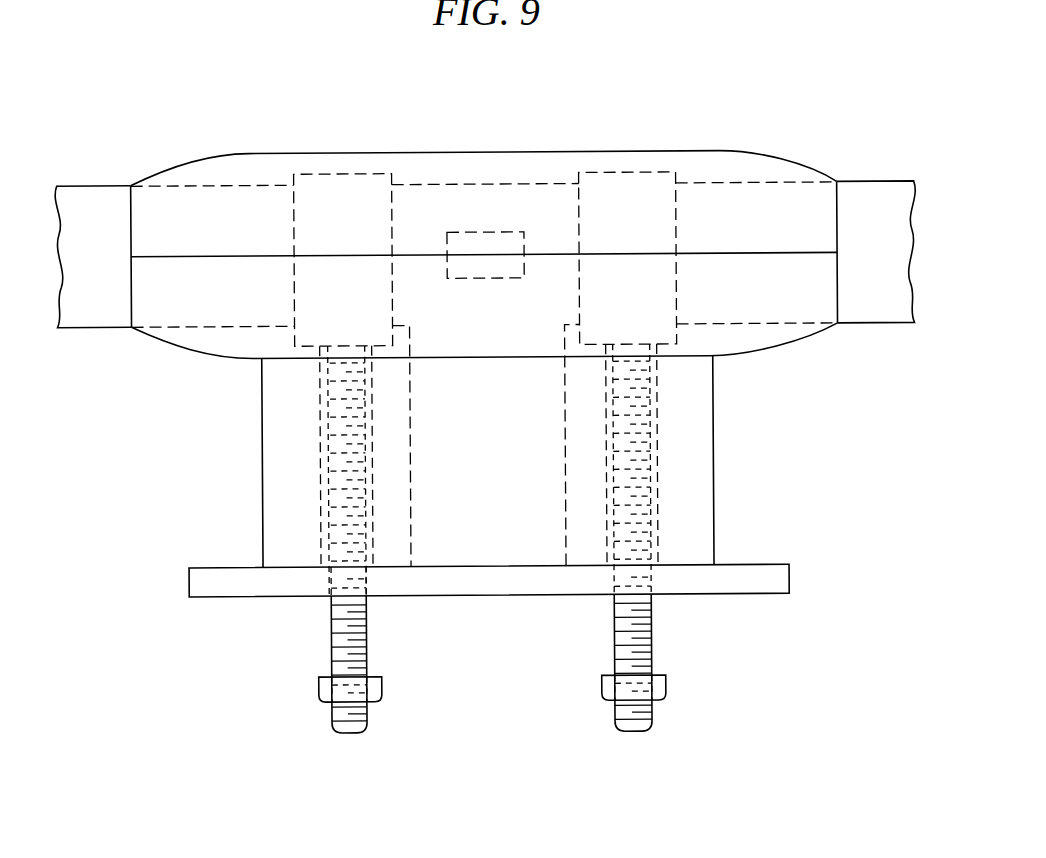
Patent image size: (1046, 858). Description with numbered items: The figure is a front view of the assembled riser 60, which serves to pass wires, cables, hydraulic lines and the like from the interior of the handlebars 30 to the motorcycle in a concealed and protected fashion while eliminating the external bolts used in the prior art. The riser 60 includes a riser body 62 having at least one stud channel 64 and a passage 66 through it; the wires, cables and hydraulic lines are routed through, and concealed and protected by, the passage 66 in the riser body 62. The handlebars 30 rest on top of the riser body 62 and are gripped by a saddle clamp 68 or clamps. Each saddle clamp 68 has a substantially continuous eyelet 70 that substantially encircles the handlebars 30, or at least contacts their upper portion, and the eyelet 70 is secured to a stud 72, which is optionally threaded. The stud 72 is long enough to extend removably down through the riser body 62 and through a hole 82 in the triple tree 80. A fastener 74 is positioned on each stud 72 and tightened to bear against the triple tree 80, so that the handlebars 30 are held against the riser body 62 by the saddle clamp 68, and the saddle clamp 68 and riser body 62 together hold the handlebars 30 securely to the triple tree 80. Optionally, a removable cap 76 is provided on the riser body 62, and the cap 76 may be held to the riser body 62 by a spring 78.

The handlebars 30 is at (107, 202).
The riser 60 is at (775, 137).
The riser body 62 is at (208, 340).
The stud channel 64 is at (320, 457).
The passage 66 is at (490, 548).
The saddle clamp 68 is at (310, 623).
The eyelet 70 is at (343, 192).
The stud 72 is at (347, 618).
The fastener 74 is at (325, 688).
The removable cap 76 is at (245, 170).
The spring 78 is at (485, 240).
The triple tree 80 is at (212, 582).
The hole 82 is at (328, 582).